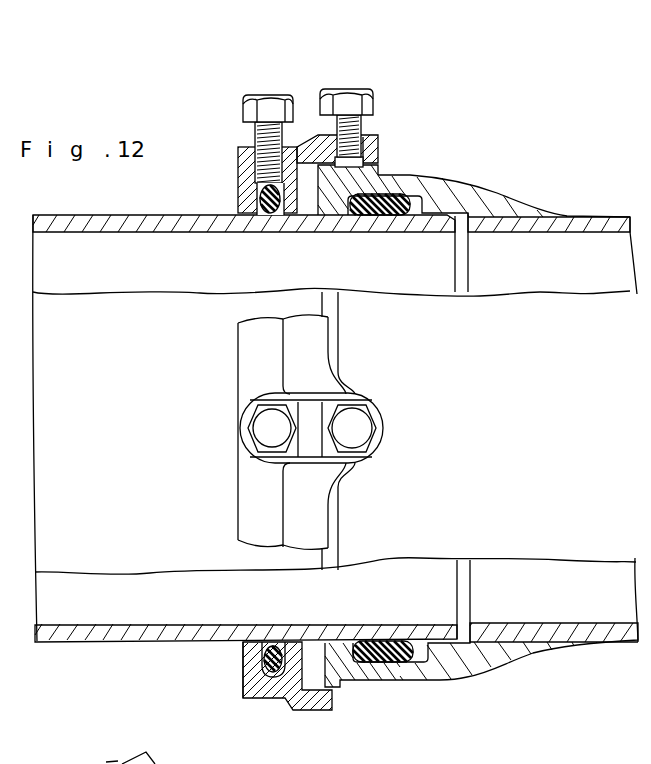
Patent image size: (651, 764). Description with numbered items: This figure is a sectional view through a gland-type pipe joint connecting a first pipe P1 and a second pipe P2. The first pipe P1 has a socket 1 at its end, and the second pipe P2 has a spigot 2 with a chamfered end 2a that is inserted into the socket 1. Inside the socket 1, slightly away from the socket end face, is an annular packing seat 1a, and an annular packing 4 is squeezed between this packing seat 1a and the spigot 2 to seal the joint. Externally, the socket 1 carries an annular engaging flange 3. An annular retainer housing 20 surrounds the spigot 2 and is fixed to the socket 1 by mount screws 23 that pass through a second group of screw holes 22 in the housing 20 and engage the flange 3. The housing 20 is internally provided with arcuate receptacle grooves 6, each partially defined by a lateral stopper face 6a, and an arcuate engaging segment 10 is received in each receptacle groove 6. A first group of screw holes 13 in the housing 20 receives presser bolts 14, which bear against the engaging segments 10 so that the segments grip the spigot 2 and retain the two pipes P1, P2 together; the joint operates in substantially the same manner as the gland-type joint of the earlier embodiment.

The socket 1 is at (490, 195).
The annular packing seat 1a is at (398, 200).
The spigot 2 is at (318, 233).
The chamfered end 2a is at (447, 223).
The annular engaging flange 3 is at (333, 688).
The annular packing 4 is at (380, 215).
The arcuate receptacle groove 6 is at (268, 672).
The lateral stopper face 6a is at (243, 662).
The arcuate engaging segment 10 is at (270, 215).
The screw hole 13 is at (288, 150).
The presser bolt 14 is at (269, 96).
The annular retainer housing 20 is at (238, 150).
The screw hole 22 is at (352, 140).
The mount screw 23 is at (347, 91).
The first pipe P1 is at (591, 228).
The second pipe P2 is at (75, 232).